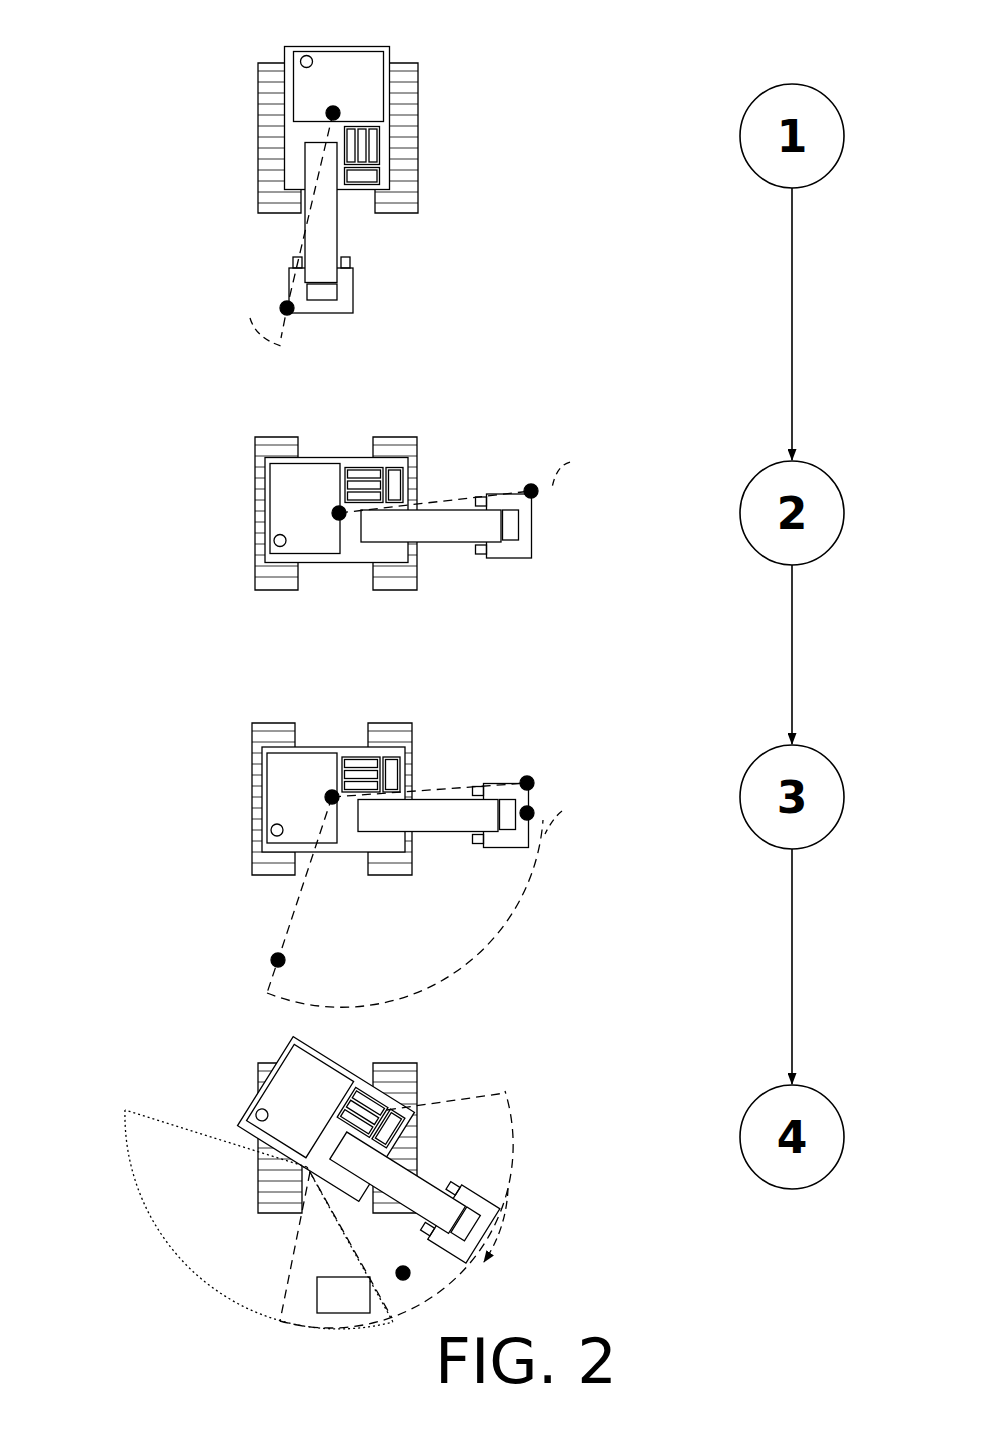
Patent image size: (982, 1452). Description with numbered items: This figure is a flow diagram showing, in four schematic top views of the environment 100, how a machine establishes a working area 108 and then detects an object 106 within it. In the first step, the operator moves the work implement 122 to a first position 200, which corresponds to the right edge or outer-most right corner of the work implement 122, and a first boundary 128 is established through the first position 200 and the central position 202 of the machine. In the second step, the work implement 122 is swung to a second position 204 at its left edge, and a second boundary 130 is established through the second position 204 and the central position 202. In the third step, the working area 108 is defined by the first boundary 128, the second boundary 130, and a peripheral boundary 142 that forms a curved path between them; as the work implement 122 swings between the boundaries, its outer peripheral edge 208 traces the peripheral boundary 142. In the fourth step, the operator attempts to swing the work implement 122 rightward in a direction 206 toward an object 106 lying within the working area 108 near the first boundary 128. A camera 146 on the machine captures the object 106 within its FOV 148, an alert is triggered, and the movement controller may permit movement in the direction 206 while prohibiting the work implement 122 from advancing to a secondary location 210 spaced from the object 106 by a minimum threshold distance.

The environment 100 is at (379, 638).
The object 106 is at (362, 1306).
The working area 108 is at (430, 938).
The work implement 122 is at (352, 292).
The first boundary 128 is at (246, 320).
The second boundary 130 is at (584, 461).
The peripheral boundary 142 is at (567, 813).
The camera 146 is at (297, 1171).
The FOV 148 is at (238, 1298).
The first position 200 is at (274, 300).
The central position 202 is at (320, 113).
The second position 204 is at (536, 484).
The direction 206 is at (502, 1237).
The outer peripheral edge 208 is at (539, 801).
The secondary location 210 is at (411, 1288).